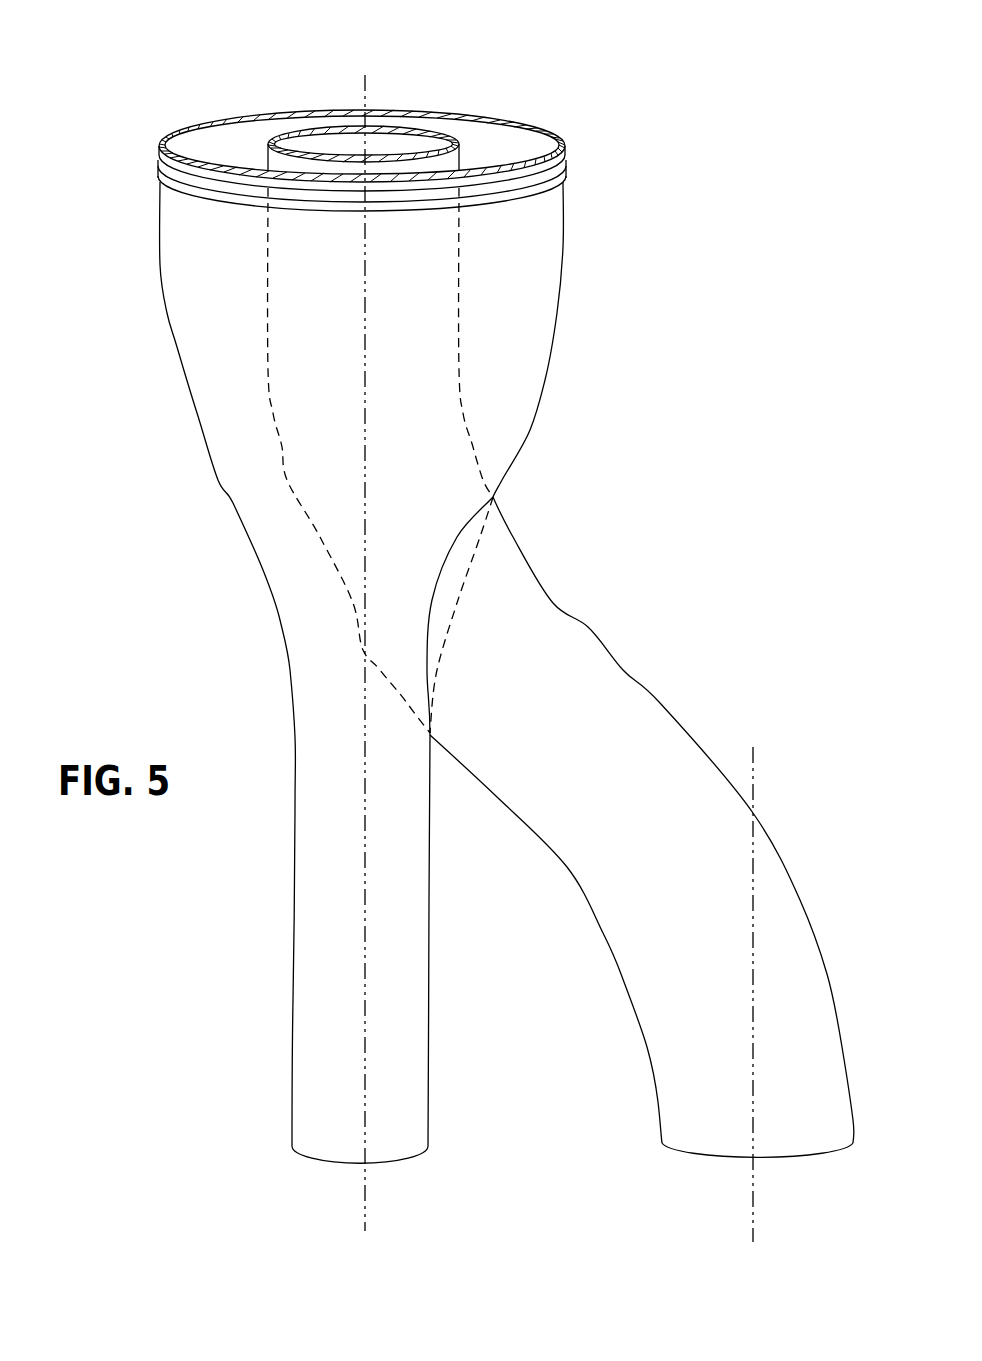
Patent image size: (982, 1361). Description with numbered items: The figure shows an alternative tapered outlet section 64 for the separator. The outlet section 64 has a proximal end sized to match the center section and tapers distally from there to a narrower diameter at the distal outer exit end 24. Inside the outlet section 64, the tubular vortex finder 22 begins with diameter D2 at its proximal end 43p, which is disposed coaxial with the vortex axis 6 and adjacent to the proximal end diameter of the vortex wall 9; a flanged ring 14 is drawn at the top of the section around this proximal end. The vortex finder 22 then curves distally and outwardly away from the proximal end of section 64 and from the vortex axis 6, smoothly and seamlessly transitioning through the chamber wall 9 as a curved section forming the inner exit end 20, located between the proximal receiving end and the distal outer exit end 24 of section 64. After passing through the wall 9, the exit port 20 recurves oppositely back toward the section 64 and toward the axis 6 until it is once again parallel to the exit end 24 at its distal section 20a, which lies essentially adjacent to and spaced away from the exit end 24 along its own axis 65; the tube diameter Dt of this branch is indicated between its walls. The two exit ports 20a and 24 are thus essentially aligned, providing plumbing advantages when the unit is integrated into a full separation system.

The vortex finder diameter D2 is at (460, 103).
The proximal end of vortex finder 43p is at (268, 145).
The flange ring 14 is at (566, 178).
The tubular vortex finder 22 is at (267, 250).
The vortex wall 9 is at (535, 400).
The tapered outlet section 64 is at (172, 485).
The inner exit end 20 is at (588, 625).
The branch tube diameter Dt is at (621, 671).
The distal section of exit port 20a is at (802, 903).
The distal outer exit end 24 is at (295, 945).
The vortex axis 6 is at (365, 1197).
The branch axis 65 is at (752, 1208).